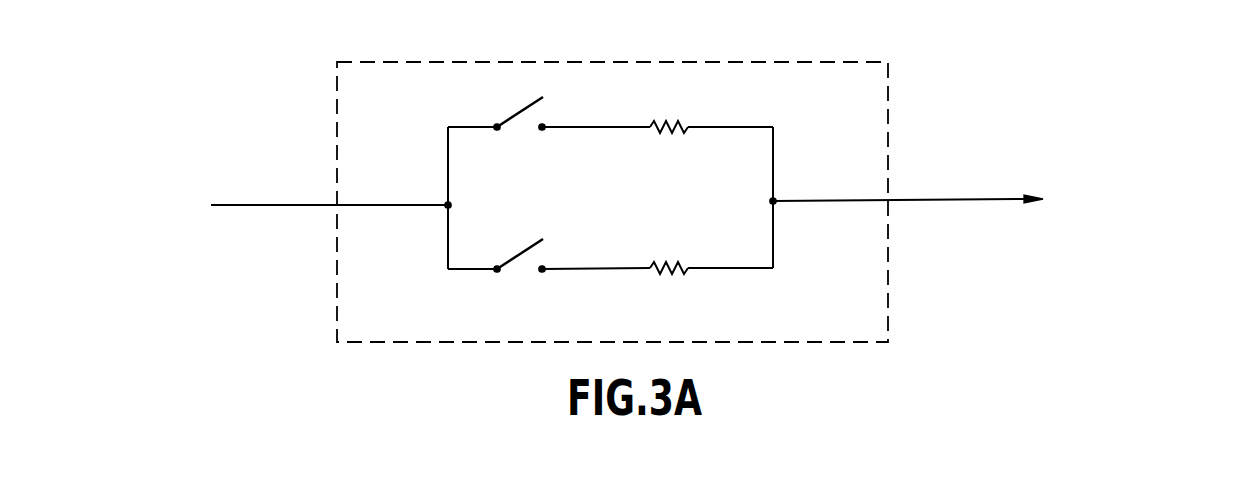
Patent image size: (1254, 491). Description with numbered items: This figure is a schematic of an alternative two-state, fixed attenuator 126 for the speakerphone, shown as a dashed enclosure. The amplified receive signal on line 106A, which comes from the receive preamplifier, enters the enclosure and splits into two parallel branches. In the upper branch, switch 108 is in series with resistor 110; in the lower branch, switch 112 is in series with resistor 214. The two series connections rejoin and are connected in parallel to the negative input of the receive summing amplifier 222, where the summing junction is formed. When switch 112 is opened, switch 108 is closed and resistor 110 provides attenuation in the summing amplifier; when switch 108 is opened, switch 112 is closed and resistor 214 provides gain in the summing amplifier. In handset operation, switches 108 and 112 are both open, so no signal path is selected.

The attenuator 126 is at (765, 61).
The amplified receive signal line 106A is at (273, 205).
The switch 108 is at (515, 112).
The selector switch 112 is at (519, 257).
The resistor 110 is at (675, 122).
The input resistor 214 is at (681, 273).
The receive summing amplifier 222 is at (997, 208).